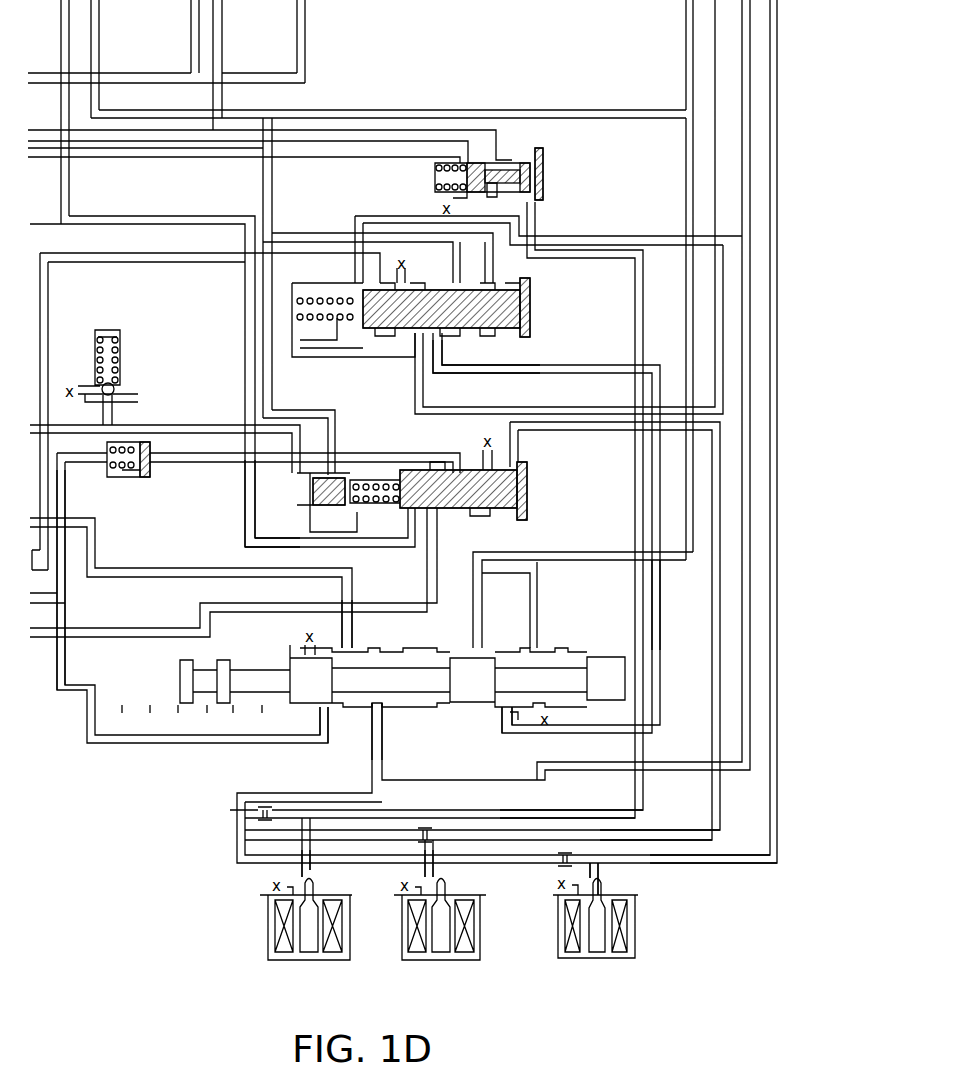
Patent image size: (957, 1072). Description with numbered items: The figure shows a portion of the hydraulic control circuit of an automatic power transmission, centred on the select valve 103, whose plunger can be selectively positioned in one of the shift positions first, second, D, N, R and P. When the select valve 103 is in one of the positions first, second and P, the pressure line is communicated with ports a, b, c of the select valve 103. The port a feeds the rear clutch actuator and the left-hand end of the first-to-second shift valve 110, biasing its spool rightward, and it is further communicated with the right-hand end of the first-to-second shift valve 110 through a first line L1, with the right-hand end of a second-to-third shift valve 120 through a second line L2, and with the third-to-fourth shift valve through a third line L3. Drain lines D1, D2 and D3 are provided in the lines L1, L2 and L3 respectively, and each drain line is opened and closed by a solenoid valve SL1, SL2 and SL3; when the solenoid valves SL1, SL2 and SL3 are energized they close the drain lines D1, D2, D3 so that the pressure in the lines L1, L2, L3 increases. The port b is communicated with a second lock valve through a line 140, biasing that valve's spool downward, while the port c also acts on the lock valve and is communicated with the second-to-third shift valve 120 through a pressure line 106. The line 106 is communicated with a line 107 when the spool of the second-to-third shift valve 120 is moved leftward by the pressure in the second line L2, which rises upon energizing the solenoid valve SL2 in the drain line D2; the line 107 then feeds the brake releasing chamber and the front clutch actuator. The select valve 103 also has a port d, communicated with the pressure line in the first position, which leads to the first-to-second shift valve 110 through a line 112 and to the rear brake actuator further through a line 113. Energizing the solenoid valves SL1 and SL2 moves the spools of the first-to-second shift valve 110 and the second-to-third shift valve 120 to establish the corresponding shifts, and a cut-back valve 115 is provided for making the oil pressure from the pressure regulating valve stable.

The select valve 103 is at (278, 665).
The pressure line 106 is at (173, 462).
The line 107 is at (246, 524).
The 1-2 shift valve 110 is at (386, 340).
The line 112 is at (655, 615).
The line 113 is at (463, 400).
The cut-back valve 115 is at (514, 157).
The 2-3 shift valve 120 is at (413, 468).
The line 140 is at (95, 549).
The port a is at (374, 706).
The port b is at (352, 652).
The port c is at (324, 740).
The port d is at (507, 710).
The first line L1 is at (612, 812).
The second line L2 is at (677, 838).
The third line L3 is at (748, 862).
The first drain line D1 is at (312, 871).
The second drain line D2 is at (443, 873).
The third drain line D3 is at (608, 873).
The first solenoid valve SL1 is at (312, 933).
The second solenoid valve SL2 is at (445, 933).
The third solenoid valve SL3 is at (602, 933).